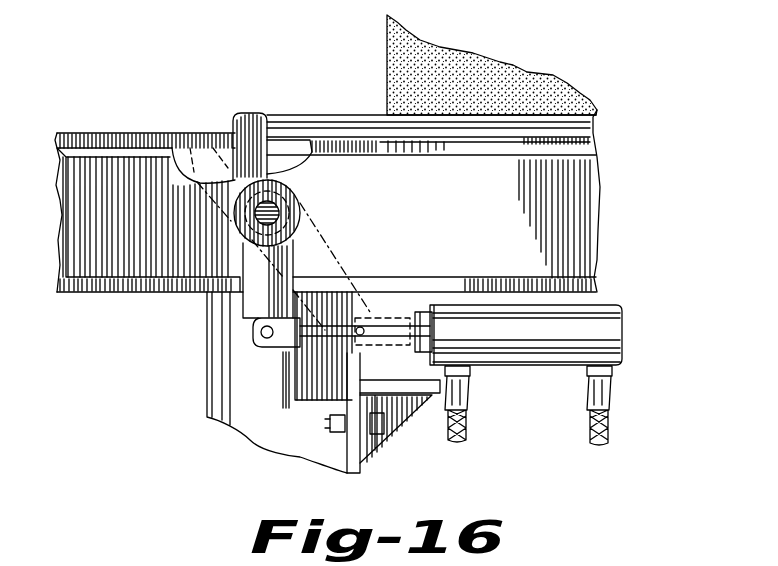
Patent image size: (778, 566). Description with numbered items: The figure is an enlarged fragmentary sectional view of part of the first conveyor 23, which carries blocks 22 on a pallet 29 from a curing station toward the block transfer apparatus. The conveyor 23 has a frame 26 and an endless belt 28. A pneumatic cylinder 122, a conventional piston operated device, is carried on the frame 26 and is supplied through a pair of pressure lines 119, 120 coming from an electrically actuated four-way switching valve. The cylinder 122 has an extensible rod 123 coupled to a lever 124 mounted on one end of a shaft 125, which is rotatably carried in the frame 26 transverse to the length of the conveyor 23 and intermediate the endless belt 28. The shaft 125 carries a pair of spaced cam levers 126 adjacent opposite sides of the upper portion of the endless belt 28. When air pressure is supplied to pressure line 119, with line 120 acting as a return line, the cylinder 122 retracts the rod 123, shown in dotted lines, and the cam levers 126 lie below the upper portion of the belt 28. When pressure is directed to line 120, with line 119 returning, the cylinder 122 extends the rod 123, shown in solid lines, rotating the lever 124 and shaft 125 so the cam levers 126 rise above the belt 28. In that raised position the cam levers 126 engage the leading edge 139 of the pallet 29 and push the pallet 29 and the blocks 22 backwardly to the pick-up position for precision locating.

The blocks 22 is at (507, 66).
The pallet 29 is at (592, 128).
The frame 26 is at (52, 201).
The first conveyor 23 is at (86, 300).
The endless belt 28 is at (182, 135).
The cam levers 126 is at (238, 129).
The leading edge 139 is at (266, 111).
The shaft 125 is at (281, 211).
The lever 124 is at (260, 303).
The extensible rod 123 is at (388, 330).
The pneumatic cylinder 122 is at (625, 339).
The pressure line 119 is at (466, 428).
The pressure line 120 is at (610, 432).